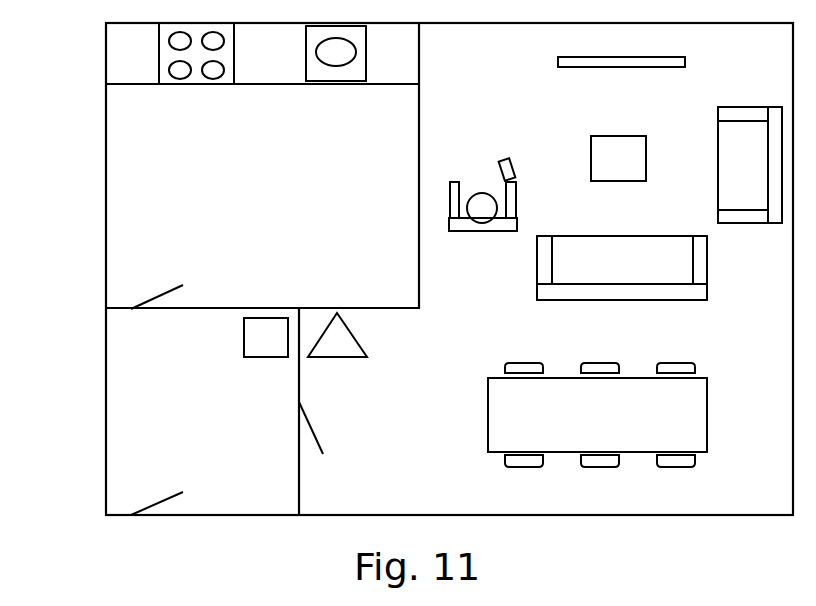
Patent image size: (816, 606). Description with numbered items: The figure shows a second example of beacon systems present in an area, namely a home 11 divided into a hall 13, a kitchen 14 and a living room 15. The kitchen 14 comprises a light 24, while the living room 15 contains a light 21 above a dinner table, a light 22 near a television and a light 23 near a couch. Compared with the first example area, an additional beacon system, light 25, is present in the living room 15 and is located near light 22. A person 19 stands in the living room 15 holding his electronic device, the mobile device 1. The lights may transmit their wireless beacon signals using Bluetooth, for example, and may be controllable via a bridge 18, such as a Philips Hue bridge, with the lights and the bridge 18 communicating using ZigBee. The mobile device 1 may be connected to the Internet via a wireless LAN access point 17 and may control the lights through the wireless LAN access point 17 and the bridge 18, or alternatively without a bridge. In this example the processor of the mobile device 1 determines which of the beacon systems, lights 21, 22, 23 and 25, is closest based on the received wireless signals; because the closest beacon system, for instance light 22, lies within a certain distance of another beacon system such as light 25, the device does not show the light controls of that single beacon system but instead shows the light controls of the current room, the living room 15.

The mobile device 1 is at (497, 167).
The home 11 is at (106, 370).
The hall 13 is at (260, 510).
The kitchen 14 is at (262, 166).
The living room 15 is at (753, 506).
The wireless LAN access point 17 is at (337, 335).
The bridge 18 is at (266, 337).
The person 19 is at (464, 231).
The light 21 is at (597, 415).
The light 22 is at (586, 48).
The light 23 is at (659, 203).
The light 24 is at (174, 77).
The light 25 is at (459, 46).